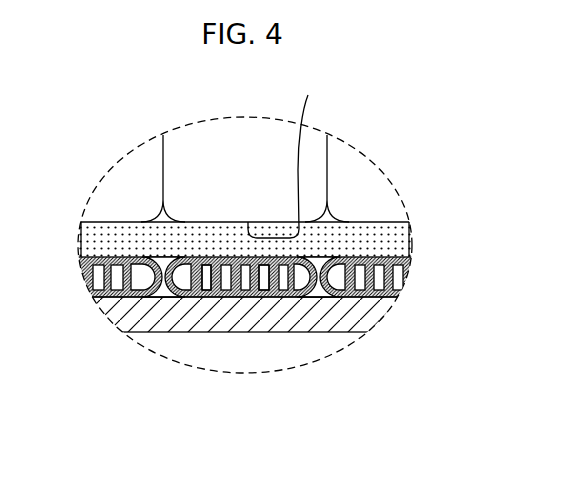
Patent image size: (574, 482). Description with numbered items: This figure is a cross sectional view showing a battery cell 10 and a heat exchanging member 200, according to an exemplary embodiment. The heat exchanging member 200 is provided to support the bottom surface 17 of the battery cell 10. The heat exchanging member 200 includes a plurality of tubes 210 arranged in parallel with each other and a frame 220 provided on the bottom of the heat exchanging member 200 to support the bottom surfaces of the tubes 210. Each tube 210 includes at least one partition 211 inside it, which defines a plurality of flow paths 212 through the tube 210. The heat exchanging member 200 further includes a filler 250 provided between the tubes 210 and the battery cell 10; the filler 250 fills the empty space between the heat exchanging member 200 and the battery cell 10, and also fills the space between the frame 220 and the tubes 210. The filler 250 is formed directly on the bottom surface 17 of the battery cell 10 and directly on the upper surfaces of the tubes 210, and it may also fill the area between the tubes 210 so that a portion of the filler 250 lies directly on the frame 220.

The battery cell 10 is at (350, 183).
The bottom surface 17 is at (283, 155).
The heat exchanging member 200 is at (373, 412).
The tubes 210 is at (152, 299).
The partition 211 is at (204, 289).
The flow paths 212 is at (260, 289).
The frame 220 is at (367, 320).
The filler 250 is at (320, 242).